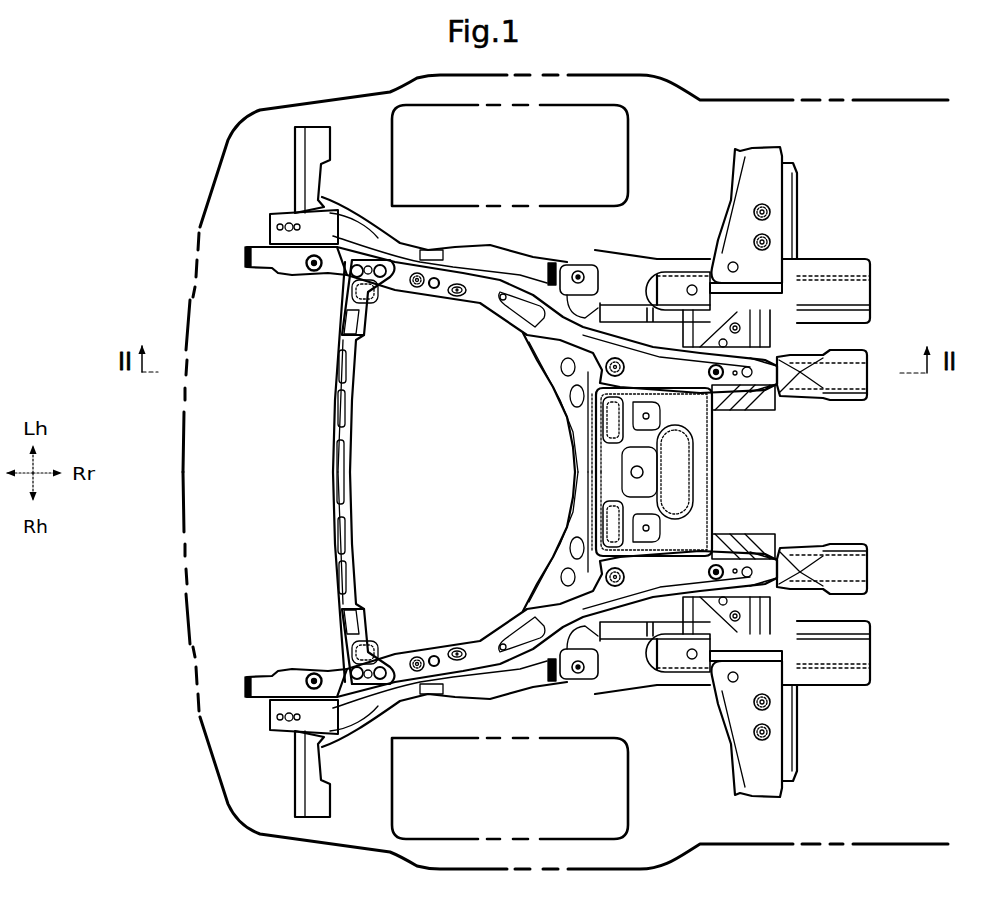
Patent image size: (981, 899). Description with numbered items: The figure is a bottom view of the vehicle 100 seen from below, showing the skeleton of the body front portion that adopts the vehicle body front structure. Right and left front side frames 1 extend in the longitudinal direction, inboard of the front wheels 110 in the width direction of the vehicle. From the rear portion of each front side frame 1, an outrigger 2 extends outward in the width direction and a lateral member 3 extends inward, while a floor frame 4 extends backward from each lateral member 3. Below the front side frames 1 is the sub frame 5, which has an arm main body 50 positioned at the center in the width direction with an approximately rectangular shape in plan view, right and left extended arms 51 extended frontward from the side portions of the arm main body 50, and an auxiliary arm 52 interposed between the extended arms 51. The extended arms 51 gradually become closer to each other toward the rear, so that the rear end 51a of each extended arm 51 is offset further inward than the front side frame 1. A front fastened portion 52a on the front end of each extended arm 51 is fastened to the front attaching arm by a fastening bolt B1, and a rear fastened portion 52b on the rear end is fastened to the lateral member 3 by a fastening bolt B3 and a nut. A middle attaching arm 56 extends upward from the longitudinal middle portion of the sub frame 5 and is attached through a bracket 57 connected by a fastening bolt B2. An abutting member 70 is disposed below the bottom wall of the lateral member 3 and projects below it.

The front side frame 1 is at (626, 260).
The outrigger 2 is at (805, 216).
The lateral member 3 is at (774, 337).
The floor frame 4 is at (878, 377).
The sub frame 5 is at (433, 472).
The arm main body 50 is at (704, 470).
The extended arm 51 is at (480, 302).
The rear end of the extended arm 51a is at (778, 386).
The auxiliary arm 52 is at (356, 472).
The front fastened portion 52a is at (306, 270).
The rear fastened portion 52b is at (743, 472).
The middle attaching arm 56 is at (663, 277).
The bracket 57 is at (548, 257).
The abutting member 70 is at (788, 371).
The vehicle 100 is at (207, 197).
The front wheel 110 is at (632, 162).
The fastening bolt B1 is at (314, 472).
The fastening bolt B2 is at (578, 270).
The fastening bolt B3 is at (720, 410).